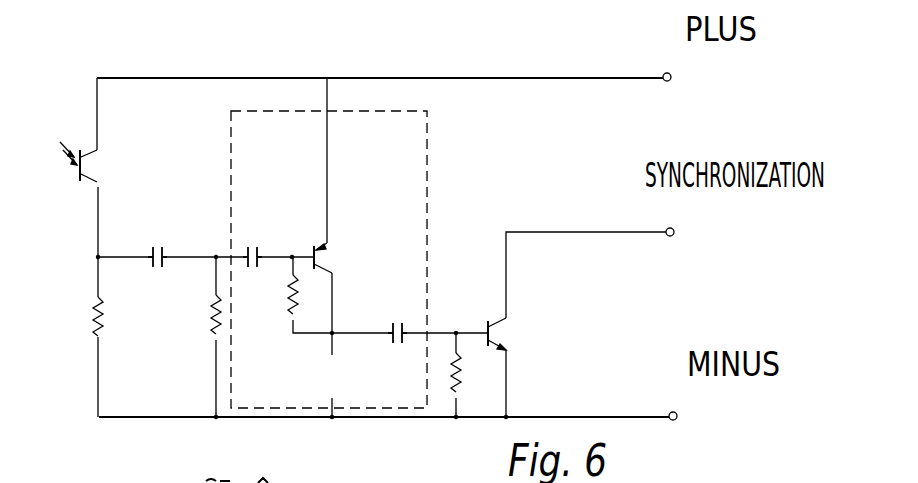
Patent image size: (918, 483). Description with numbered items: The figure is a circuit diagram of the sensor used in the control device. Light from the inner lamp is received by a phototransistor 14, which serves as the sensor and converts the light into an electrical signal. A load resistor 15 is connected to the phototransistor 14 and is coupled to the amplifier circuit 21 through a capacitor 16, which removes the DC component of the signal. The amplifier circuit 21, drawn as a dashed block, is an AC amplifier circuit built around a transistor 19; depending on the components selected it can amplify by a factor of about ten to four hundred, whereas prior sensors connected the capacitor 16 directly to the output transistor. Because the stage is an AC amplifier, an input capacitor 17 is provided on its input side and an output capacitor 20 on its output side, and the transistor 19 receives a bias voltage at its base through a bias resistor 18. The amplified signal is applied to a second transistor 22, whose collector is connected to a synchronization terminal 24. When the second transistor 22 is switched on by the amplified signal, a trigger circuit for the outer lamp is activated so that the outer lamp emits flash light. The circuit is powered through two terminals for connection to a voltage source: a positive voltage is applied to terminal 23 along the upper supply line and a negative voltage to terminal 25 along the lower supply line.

The phototransistor 14 is at (98, 165).
The load resistor 15 is at (115, 317).
The capacitor 16 is at (160, 238).
The input capacitor 17 is at (255, 238).
The bias resistor 18 is at (285, 312).
The transistor 19 is at (337, 257).
The output capacitor 20 is at (395, 350).
The amplifier circuit 21 is at (427, 150).
The second transistor 22 is at (512, 330).
The terminal 23 is at (675, 70).
The synchronization terminal 24 is at (678, 225).
The terminal 25 is at (685, 412).